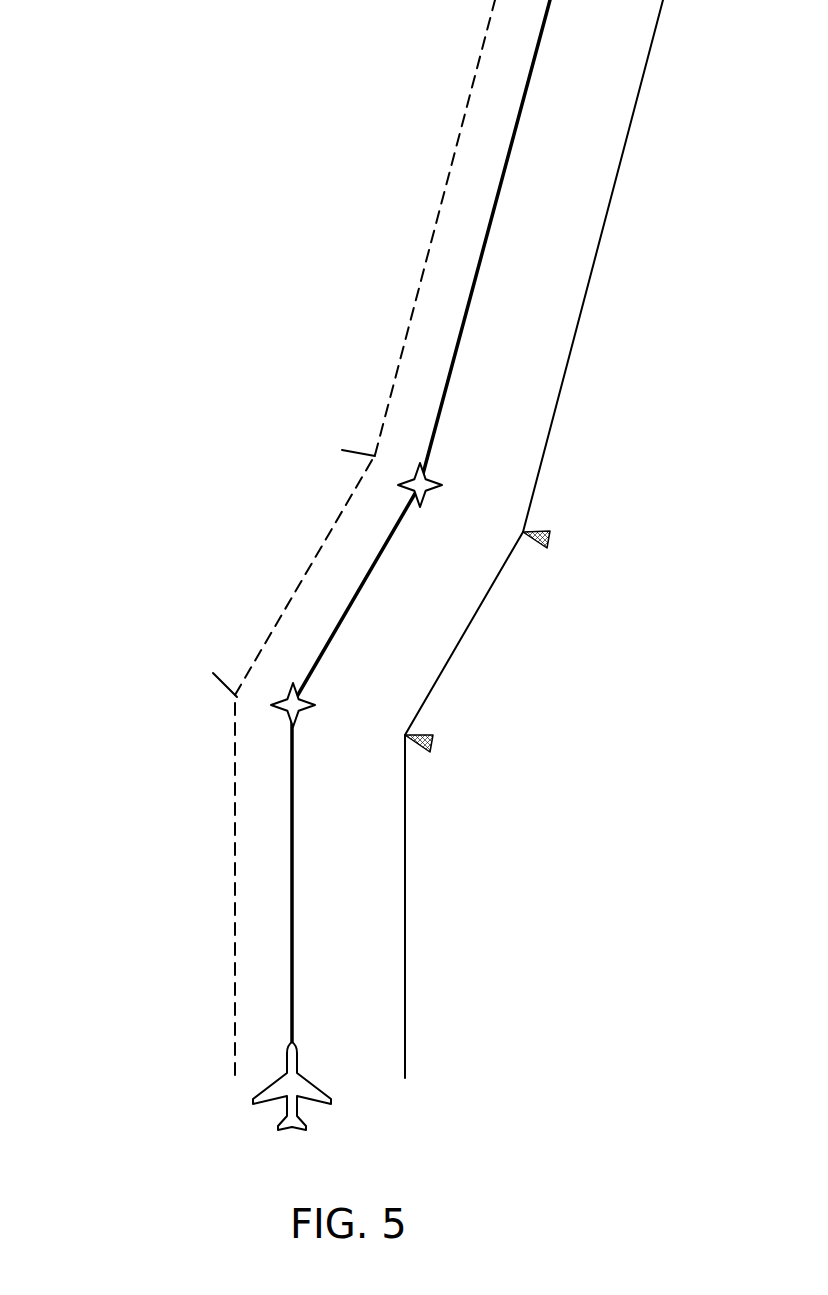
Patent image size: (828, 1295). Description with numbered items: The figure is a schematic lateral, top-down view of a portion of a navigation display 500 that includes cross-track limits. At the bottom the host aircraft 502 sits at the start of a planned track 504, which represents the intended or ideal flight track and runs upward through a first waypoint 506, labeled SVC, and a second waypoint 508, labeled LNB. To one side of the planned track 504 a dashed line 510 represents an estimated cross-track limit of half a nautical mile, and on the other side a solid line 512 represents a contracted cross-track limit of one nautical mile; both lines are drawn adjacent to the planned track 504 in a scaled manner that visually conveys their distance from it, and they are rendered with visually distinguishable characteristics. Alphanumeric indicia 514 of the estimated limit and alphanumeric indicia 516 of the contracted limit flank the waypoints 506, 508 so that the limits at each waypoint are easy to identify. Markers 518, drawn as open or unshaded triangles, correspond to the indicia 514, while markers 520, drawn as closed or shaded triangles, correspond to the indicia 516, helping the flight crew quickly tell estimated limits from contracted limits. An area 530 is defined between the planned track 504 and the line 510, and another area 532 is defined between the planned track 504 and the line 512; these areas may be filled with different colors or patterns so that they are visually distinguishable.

The navigation display 500 is at (160, 136).
The host aircraft 502 is at (297, 1058).
The planned track 504 is at (496, 203).
The first waypoint 506 is at (297, 712).
The second waypoint 508 is at (425, 495).
The line representing estimated cross-track limit 510 is at (436, 208).
The line representing contracted cross-track limit 512 is at (584, 303).
The alphanumeric indicia of estimated cross-track limit 514 is at (292, 408).
The alphanumeric indicia of contracted cross-track limit 516 is at (610, 537).
The markers 518 is at (368, 452).
The markers 520 is at (546, 549).
The area 530 is at (413, 317).
The area 532 is at (543, 366).